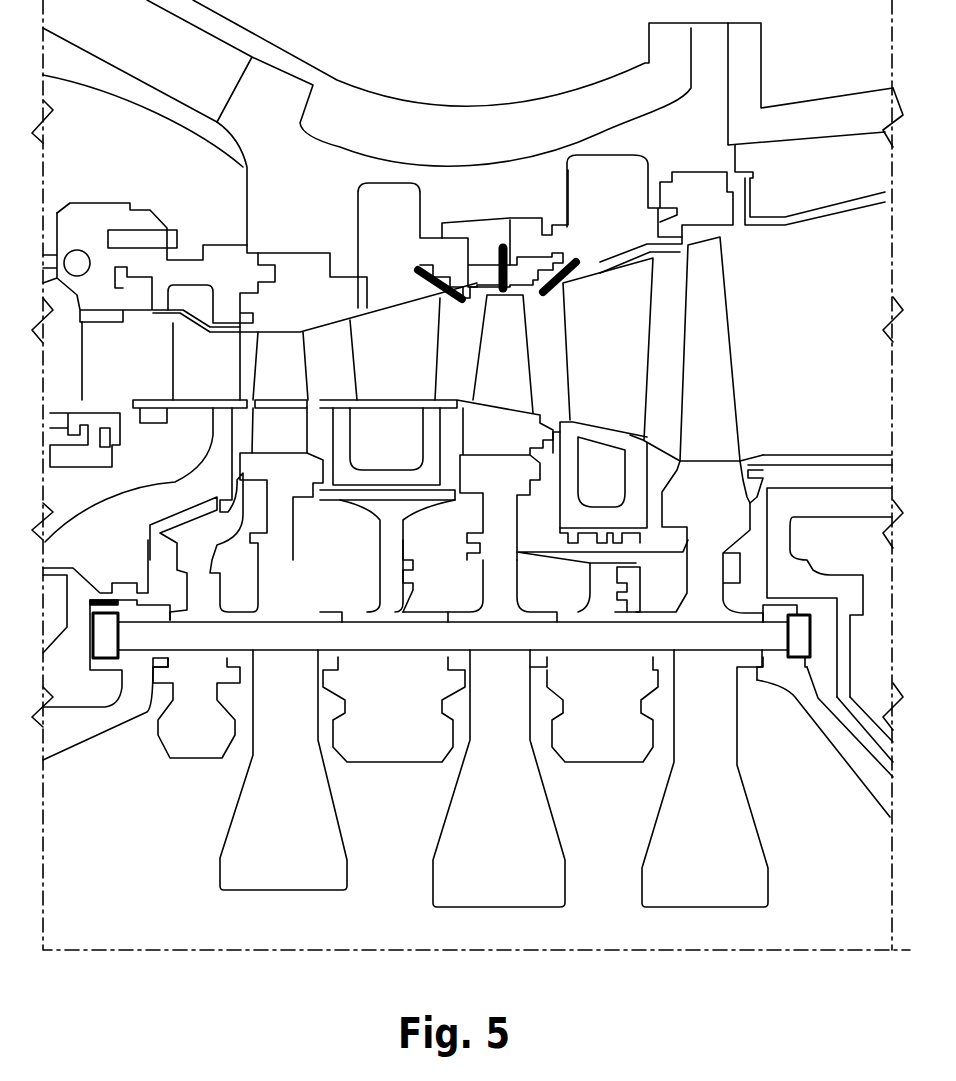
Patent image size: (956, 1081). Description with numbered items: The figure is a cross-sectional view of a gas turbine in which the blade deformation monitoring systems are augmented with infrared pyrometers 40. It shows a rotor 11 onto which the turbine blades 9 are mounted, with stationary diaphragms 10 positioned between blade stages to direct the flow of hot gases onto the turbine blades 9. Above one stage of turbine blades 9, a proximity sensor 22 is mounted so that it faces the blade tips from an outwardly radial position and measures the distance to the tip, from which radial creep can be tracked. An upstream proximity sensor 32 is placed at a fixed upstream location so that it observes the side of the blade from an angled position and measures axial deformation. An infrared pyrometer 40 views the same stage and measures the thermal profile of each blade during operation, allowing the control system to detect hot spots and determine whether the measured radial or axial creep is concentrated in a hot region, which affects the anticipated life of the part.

The turbine blade 9 is at (513, 367).
The diaphragm 10 is at (390, 348).
The rotor 11 is at (500, 827).
The proximity sensor 22 is at (500, 250).
The upstream proximity sensor 32 is at (442, 282).
The infrared pyrometer 40 is at (566, 266).